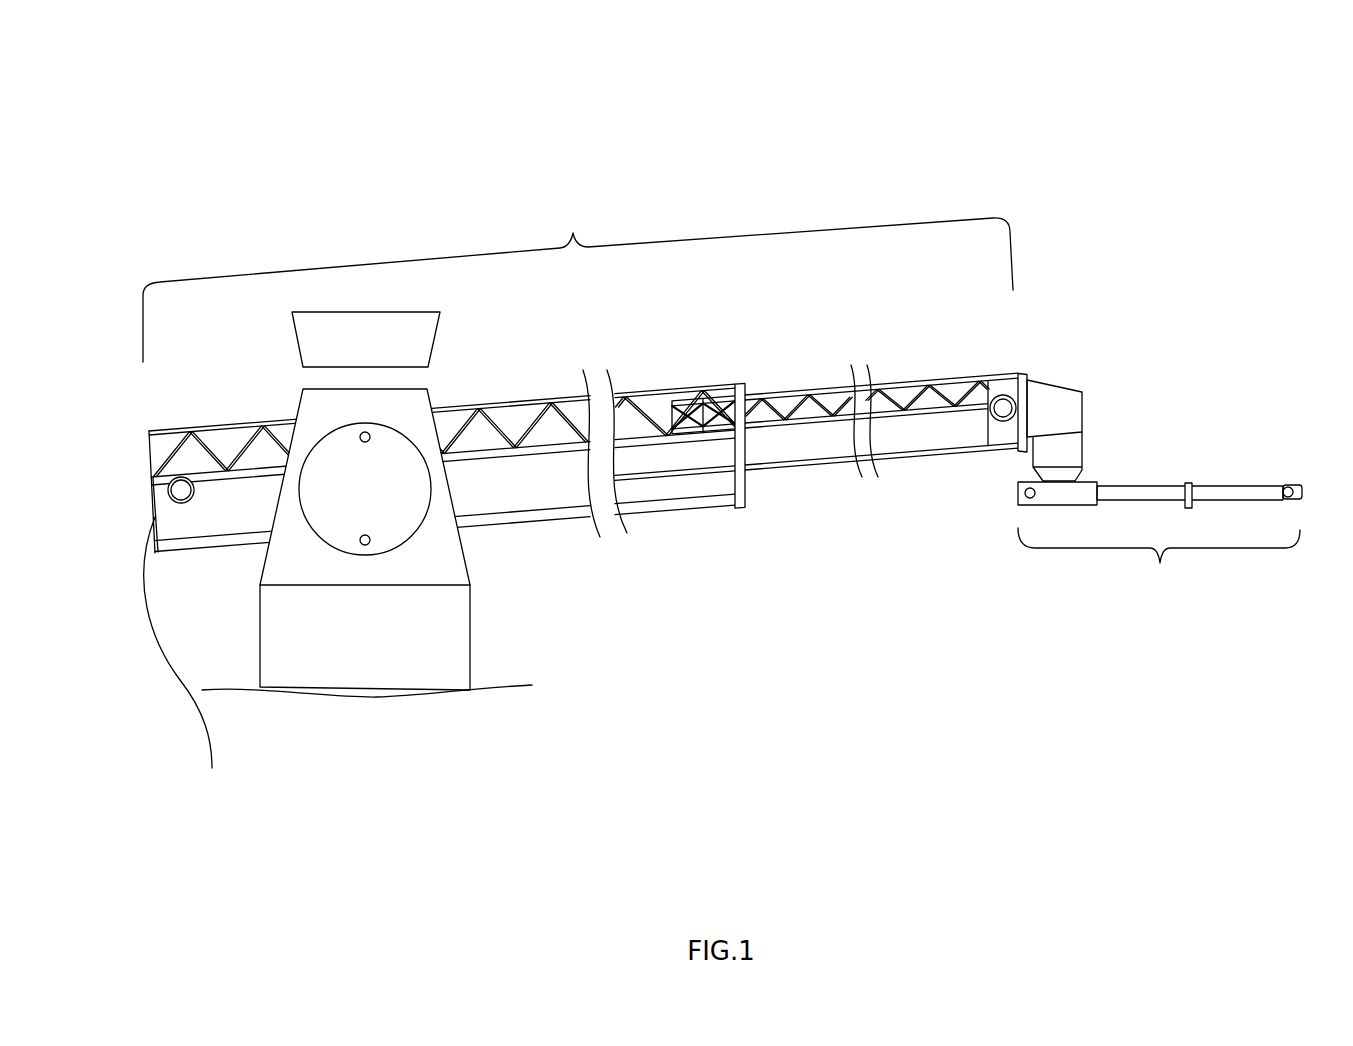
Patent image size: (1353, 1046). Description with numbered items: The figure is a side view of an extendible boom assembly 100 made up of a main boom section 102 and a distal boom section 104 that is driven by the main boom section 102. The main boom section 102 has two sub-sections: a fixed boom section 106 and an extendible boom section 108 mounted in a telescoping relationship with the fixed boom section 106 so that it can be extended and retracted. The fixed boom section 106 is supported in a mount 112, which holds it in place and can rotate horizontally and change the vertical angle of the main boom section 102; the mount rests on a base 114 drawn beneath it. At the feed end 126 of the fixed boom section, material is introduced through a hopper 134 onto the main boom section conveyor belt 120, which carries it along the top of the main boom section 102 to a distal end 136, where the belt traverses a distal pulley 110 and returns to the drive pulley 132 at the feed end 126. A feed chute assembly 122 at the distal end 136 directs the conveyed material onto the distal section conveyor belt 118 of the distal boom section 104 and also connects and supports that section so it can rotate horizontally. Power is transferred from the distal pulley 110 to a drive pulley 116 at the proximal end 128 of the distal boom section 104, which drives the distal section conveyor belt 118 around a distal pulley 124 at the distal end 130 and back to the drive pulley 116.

The extendible boom assembly 100 is at (1214, 62).
The main boom section 102 is at (578, 281).
The distal boom section 104 is at (1159, 563).
The fixed boom section 106 is at (548, 523).
The extendible boom section 108 is at (811, 472).
The distal pulley 110 is at (1003, 395).
The mount 112 is at (470, 618).
The mounting base 114 is at (247, 687).
The drive pulley 116 is at (1023, 492).
The distal section conveyor belt 118 is at (1138, 486).
The main boom section conveyor belt 120 is at (813, 388).
The feed chute assembly 122 is at (1084, 410).
The distal pulley 124 is at (1283, 486).
The feed end 126 is at (196, 656).
The proximal end 128 is at (1020, 504).
The distal end 130 is at (1302, 492).
The drive pulley 132 is at (183, 477).
The hopper 134 is at (435, 338).
The distal end 136 is at (1027, 452).